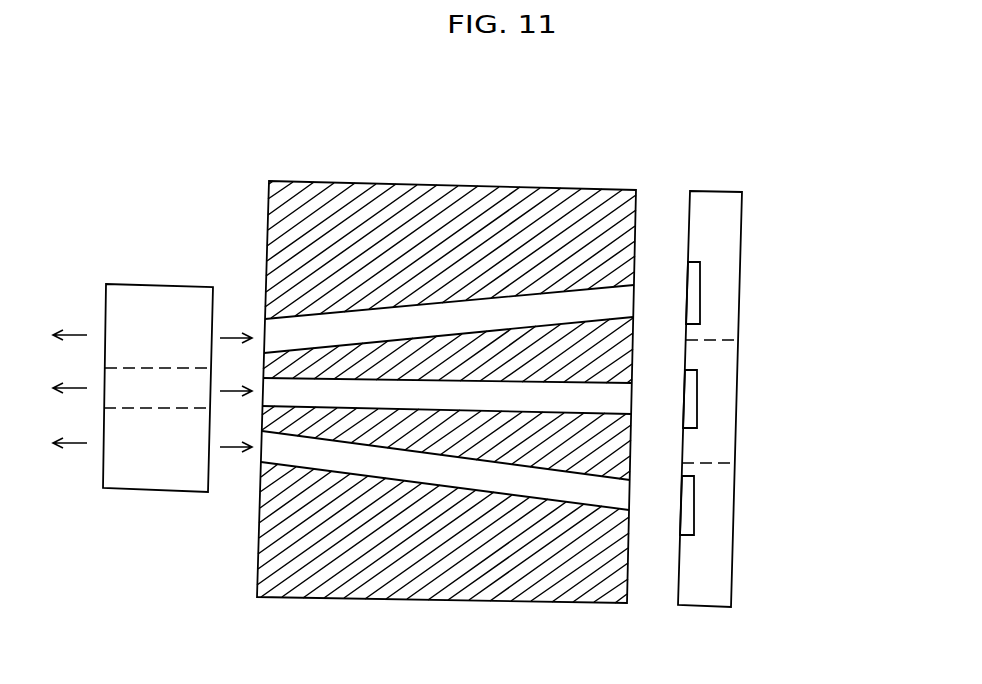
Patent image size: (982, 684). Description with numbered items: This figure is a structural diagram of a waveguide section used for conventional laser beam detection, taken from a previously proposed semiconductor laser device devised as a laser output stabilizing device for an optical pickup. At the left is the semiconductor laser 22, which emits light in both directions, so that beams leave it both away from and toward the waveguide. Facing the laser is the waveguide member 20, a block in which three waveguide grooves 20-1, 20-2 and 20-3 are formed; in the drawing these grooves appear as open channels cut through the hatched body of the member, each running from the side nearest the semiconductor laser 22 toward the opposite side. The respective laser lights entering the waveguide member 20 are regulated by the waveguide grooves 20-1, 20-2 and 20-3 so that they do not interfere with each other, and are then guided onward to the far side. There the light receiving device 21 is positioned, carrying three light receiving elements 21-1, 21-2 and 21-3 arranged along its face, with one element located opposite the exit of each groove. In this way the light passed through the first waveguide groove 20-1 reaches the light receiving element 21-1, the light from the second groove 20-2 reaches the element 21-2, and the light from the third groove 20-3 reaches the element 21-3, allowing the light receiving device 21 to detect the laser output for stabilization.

The waveguide member 20 is at (386, 183).
The waveguide groove 20-1 is at (386, 315).
The waveguide groove 20-2 is at (397, 393).
The waveguide groove 20-3 is at (447, 473).
The light receiving device 21 is at (721, 190).
The light receiving element 21-1 is at (702, 290).
The light receiving element 21-2 is at (698, 392).
The light receiving element 21-3 is at (696, 500).
The semiconductor laser 22 is at (163, 284).